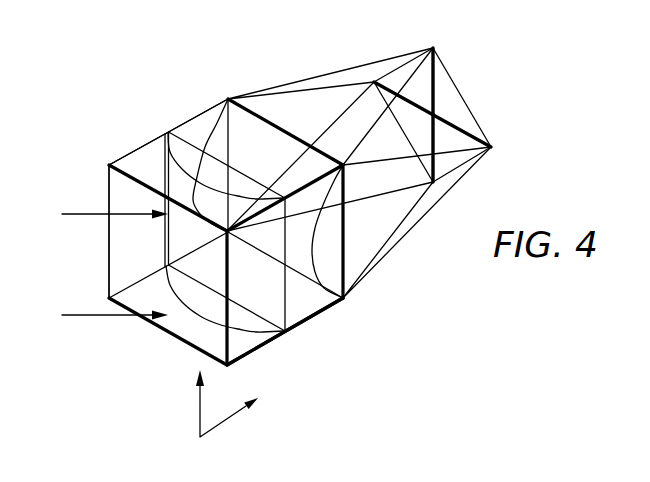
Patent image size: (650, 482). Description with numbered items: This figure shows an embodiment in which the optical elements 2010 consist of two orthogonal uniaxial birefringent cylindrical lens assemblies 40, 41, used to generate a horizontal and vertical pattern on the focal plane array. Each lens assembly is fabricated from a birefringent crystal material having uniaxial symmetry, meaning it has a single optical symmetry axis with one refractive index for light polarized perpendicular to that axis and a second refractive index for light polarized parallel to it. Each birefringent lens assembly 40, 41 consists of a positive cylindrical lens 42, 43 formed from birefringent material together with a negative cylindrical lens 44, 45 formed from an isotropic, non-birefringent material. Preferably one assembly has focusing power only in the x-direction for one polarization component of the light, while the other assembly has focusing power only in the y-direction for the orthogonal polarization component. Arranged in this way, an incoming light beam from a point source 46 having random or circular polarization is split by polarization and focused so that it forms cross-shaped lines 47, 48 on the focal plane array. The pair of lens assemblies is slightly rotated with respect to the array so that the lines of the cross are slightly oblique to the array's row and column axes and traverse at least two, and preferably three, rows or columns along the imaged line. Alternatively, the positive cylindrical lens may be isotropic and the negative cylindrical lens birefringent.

The birefringent cylindrical lens assembly 40 is at (144, 98).
The birefringent cylindrical lens assembly 41 is at (208, 60).
The positive cylindrical lens 42 is at (181, 156).
The positive cylindrical lens 43 is at (337, 260).
The negative cylindrical lens 44 is at (121, 195).
The negative cylindrical lens 45 is at (303, 307).
The point source 46 is at (85, 314).
The cross-shaped line 47 is at (433, 80).
The cross-shaped line 48 is at (461, 132).
The optical elements 2010 is at (260, 419).